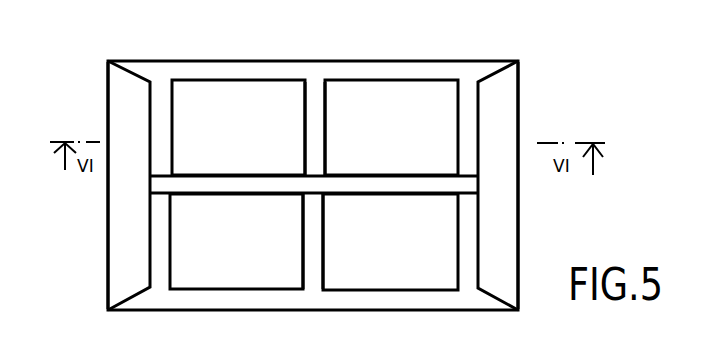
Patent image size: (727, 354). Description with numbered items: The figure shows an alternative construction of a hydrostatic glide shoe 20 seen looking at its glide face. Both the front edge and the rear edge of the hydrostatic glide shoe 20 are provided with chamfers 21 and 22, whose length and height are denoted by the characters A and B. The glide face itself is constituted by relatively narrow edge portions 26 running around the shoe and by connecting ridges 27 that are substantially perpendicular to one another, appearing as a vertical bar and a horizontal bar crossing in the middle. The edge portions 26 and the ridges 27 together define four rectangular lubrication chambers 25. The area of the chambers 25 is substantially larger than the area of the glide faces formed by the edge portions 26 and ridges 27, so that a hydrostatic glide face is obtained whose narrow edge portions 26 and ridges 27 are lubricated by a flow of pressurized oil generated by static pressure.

The hydrostatic glide shoe 20 is at (281, 95).
The chamfer 21 is at (112, 216).
The chamfer 22 is at (510, 105).
The lubrication chambers 25 is at (246, 205).
The edge portions 26 is at (463, 115).
The connecting ridges 27 is at (308, 130).